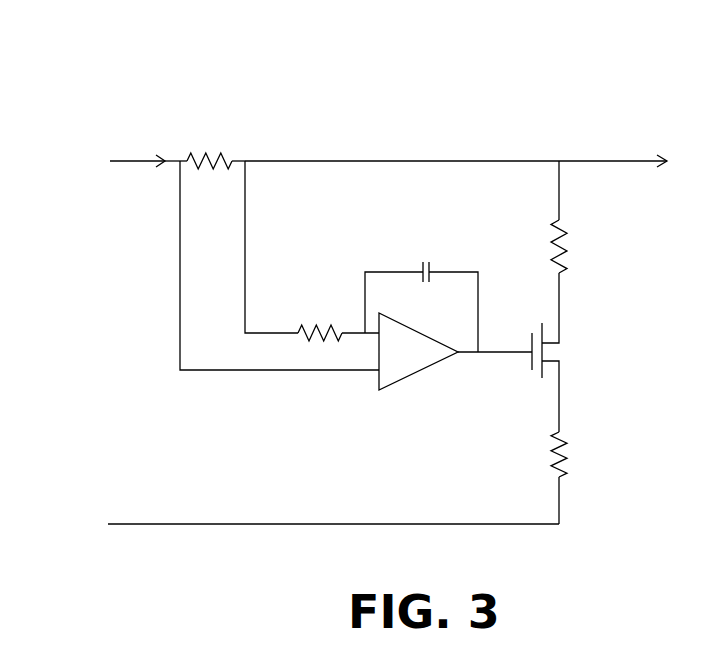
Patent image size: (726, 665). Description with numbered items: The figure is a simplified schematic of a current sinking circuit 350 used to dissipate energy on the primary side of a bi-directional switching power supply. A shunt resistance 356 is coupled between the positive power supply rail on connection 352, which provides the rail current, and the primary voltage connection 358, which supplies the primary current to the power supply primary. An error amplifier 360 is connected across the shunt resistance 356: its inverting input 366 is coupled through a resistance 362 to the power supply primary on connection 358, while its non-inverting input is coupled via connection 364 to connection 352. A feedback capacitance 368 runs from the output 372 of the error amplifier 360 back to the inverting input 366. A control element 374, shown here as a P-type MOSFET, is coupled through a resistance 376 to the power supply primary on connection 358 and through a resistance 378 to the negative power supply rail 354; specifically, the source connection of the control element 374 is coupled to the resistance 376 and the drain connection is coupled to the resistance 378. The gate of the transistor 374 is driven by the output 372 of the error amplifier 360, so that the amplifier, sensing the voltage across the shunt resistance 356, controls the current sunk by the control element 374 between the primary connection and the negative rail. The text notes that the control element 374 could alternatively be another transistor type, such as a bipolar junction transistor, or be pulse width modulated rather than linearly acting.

The current sinking circuit 350 is at (102, 47).
The positive power supply rail connection 352 is at (137, 166).
The negative power supply rail 354 is at (278, 523).
The shunt resistance 356 is at (207, 155).
The primary voltage connection 358 is at (392, 160).
The error amplifier 360 is at (402, 376).
The resistance 362 is at (326, 327).
The connection 364 is at (297, 375).
The inverting input 366 is at (359, 337).
The feedback capacitance 368 is at (418, 268).
The output 372 is at (478, 355).
The control element 374 is at (586, 348).
The resistance 376 is at (563, 243).
The resistance 378 is at (566, 450).